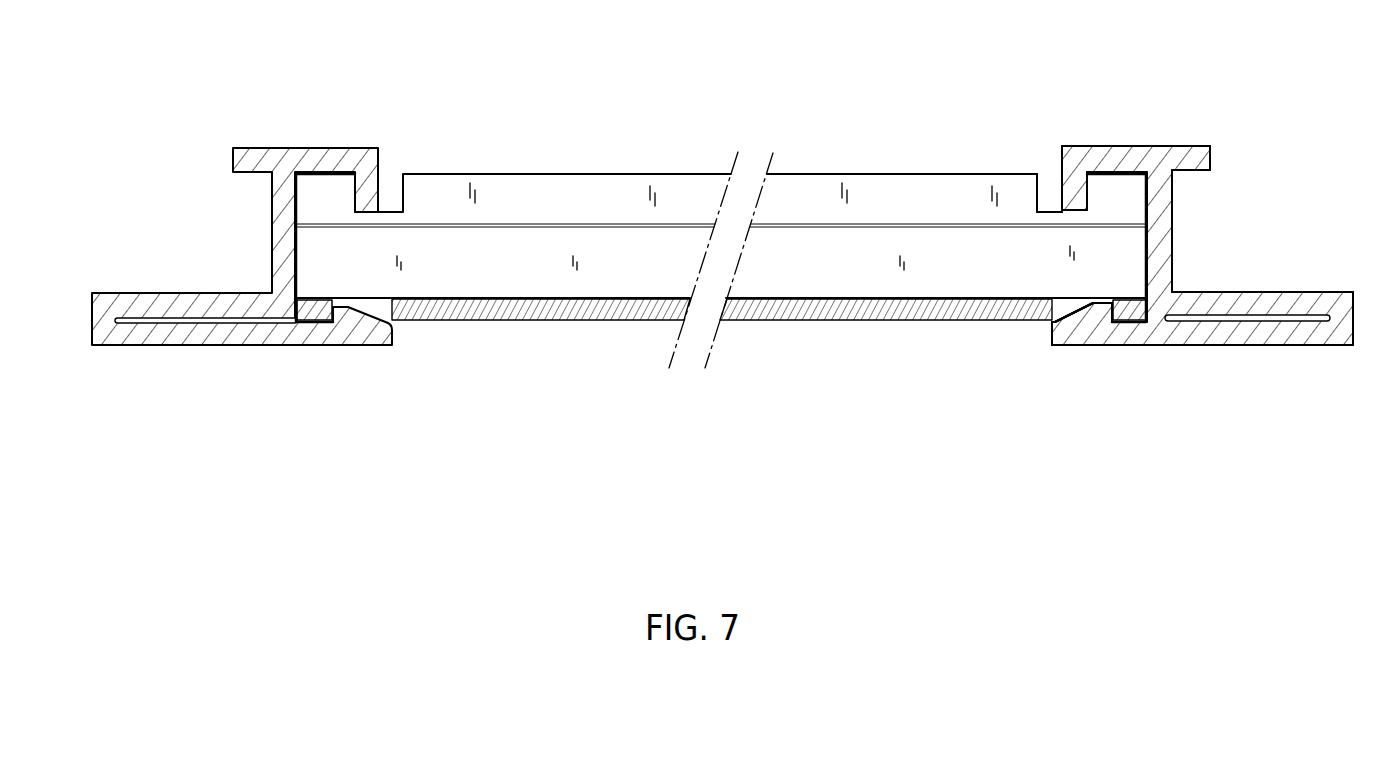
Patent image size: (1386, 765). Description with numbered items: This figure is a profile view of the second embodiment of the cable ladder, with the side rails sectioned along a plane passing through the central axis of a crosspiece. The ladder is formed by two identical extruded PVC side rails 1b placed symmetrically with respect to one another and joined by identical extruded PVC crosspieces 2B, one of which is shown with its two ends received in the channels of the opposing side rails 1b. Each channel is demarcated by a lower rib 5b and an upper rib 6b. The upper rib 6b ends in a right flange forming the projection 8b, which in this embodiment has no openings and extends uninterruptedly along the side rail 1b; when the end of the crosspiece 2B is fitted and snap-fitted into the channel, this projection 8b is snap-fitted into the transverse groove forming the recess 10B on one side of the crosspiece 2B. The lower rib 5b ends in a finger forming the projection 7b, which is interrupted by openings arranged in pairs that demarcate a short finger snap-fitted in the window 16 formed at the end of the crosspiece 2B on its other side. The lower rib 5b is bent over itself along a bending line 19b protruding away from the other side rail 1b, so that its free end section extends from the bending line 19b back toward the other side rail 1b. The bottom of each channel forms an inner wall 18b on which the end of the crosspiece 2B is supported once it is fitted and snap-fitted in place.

The side rail 1b is at (726, 233).
The crosspiece 2B is at (721, 227).
The lower rib 5b is at (1213, 347).
The upper rib 6b is at (1100, 145).
The projection of the lower rib 7b is at (1097, 312).
The projection of the upper rib 8b is at (1062, 167).
The recess 10B is at (1045, 180).
The window 16 is at (1058, 312).
The inner wall 18b is at (1150, 253).
The bending line 19b is at (1313, 326).